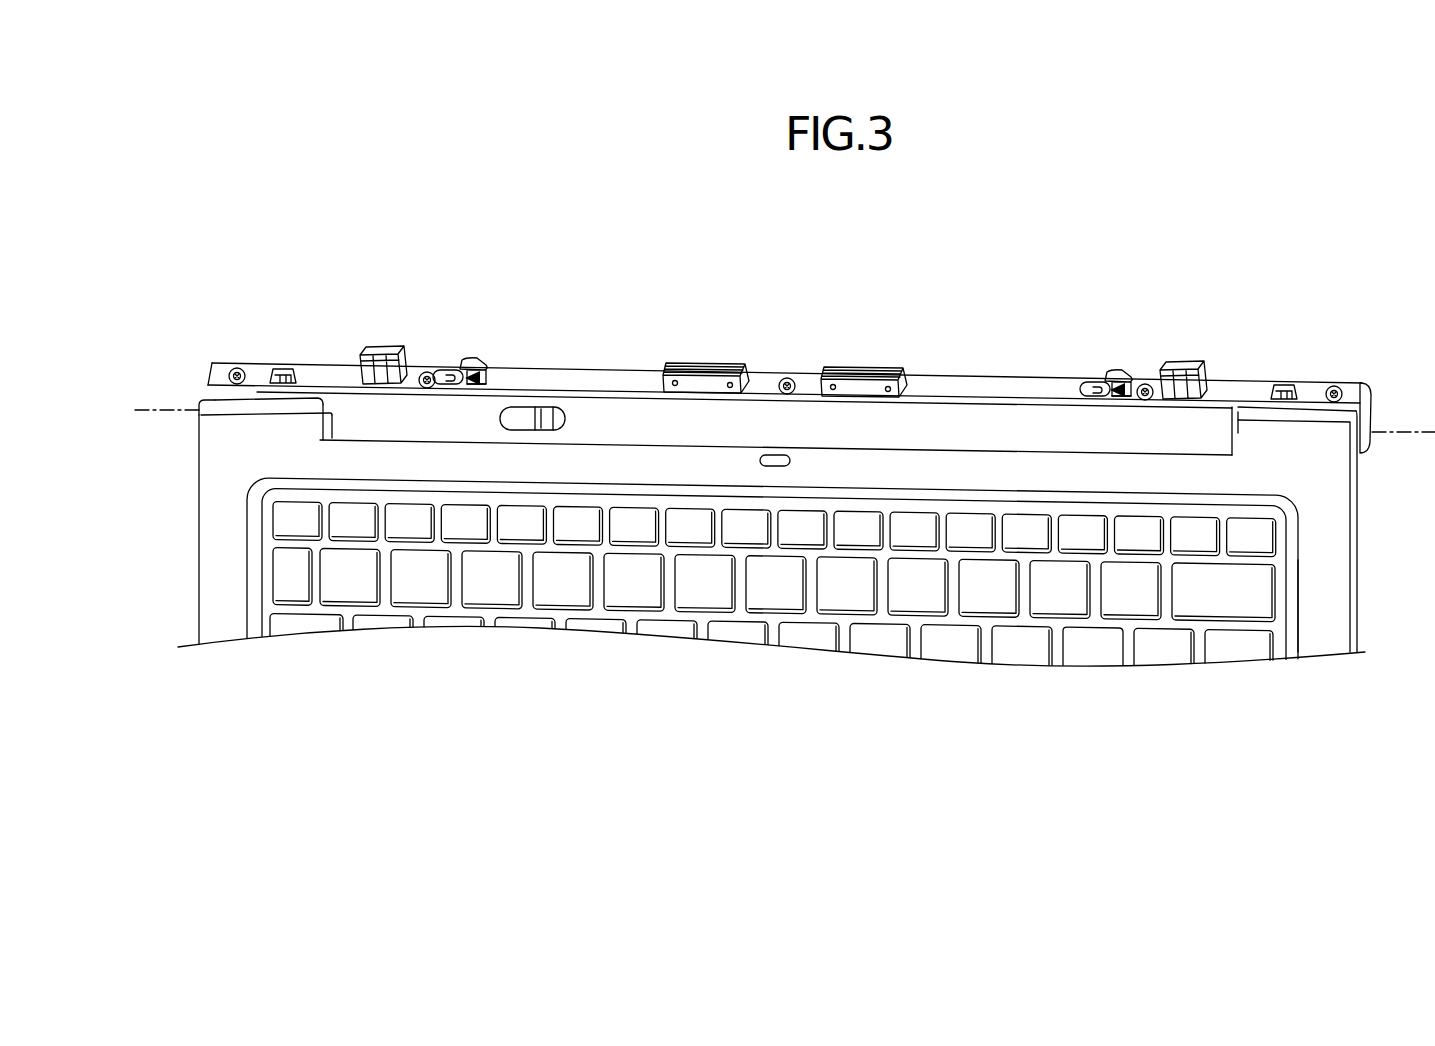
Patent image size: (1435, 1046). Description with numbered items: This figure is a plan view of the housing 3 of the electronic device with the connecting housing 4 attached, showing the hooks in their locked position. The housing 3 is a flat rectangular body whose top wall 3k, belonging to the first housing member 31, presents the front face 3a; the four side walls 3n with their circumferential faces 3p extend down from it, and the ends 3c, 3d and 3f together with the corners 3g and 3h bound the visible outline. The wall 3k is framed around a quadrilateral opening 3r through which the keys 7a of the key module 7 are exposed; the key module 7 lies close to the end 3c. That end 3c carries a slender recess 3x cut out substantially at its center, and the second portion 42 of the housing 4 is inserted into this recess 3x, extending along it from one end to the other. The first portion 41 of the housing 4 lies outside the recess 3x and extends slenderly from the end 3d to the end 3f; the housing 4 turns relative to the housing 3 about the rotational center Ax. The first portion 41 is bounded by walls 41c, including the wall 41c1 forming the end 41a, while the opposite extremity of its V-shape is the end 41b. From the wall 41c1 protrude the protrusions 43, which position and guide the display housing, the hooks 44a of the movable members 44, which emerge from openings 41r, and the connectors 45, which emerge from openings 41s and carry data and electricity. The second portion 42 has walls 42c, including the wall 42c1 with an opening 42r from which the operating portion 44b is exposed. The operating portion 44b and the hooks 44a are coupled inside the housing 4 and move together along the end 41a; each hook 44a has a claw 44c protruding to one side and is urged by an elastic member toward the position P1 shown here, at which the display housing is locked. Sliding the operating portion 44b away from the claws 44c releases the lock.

The housing 3 is at (784, 517).
The face 3a is at (771, 686).
The wall 3k is at (771, 686).
The first housing member 31 is at (220, 620).
The end 3c is at (266, 348).
The end 3d is at (1355, 497).
The end 3f is at (195, 530).
The corner 3g is at (205, 398).
The corner 3h is at (1355, 427).
The wall 3n is at (266, 348).
The face 3p is at (255, 398).
The opening 3r is at (1288, 633).
The recess 3x is at (326, 423).
The housing 4 is at (814, 504).
The first portion 41 is at (814, 381).
The end 41a is at (570, 386).
The end 41b is at (1362, 443).
The wall 41c is at (784, 337).
The wall 41c1 is at (1048, 390).
The opening 41r is at (452, 373).
The opening 41s is at (715, 383).
The second portion 42 is at (776, 575).
The wall 42c is at (776, 585).
The wall 42c1 is at (857, 428).
The opening 42r is at (553, 431).
The protrusion 43 is at (377, 343).
The movable member 44 is at (799, 512).
The hook 44a is at (463, 387).
The operating portion 44b is at (537, 408).
The claw 44c is at (808, 339).
The connector 45 is at (785, 342).
The key module 7 is at (772, 634).
The key 7a is at (1088, 653).
The rotational center Ax is at (145, 398).
The position P1 is at (1142, 335).